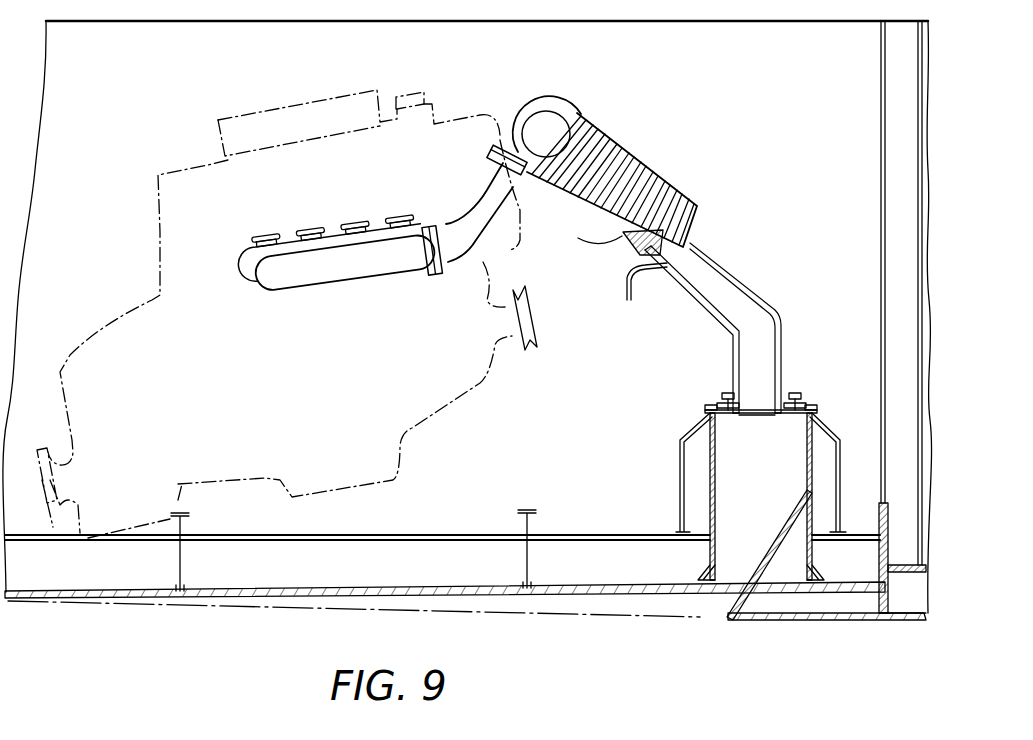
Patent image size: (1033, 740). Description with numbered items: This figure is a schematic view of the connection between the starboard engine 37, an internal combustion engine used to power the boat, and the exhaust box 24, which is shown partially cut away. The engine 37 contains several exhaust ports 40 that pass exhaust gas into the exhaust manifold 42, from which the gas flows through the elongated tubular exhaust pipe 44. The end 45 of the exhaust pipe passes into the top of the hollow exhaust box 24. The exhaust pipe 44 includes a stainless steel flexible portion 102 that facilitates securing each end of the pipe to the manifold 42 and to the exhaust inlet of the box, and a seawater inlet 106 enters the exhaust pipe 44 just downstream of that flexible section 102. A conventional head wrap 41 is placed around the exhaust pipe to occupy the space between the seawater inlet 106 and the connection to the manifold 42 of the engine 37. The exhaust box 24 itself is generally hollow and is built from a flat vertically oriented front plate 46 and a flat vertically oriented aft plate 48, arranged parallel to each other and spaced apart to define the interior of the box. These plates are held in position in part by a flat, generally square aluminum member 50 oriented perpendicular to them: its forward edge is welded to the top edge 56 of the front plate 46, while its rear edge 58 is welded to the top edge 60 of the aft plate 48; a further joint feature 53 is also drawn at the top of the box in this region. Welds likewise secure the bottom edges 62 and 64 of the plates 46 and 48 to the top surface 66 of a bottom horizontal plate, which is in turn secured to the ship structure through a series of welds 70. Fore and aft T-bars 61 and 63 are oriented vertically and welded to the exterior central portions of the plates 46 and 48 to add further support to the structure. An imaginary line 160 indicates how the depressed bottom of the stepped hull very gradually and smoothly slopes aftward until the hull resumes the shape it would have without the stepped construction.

The exhaust box 24 is at (785, 486).
The starboard engine 37 is at (155, 233).
The exhaust ports 40 is at (252, 256).
The head wrap 41 is at (610, 155).
The exhaust manifold 42 is at (461, 255).
The exhaust pipe 44 is at (710, 298).
The end of the exhaust pipe 45 is at (744, 418).
The front plate 46 is at (815, 488).
The aft plate 48 is at (709, 458).
The square shaped aluminum member 50 is at (802, 388).
The flange 53 is at (812, 412).
The top edge of plate 46 56 is at (800, 415).
The rear edge 58 is at (720, 405).
The top edge of plate 48 60 is at (710, 408).
The fore T-bar 61 is at (823, 458).
The bottom edge of plate 46 62 is at (813, 555).
The aft T-bar 63 is at (692, 500).
The bottom edge of plate 48 64 is at (715, 557).
The top surface of bottom horizontal plate 66 is at (703, 573).
The welds 70 is at (686, 580).
The flexible portion 102 is at (625, 241).
The seawater inlet 106 is at (626, 278).
The imaginary line 160 is at (625, 616).